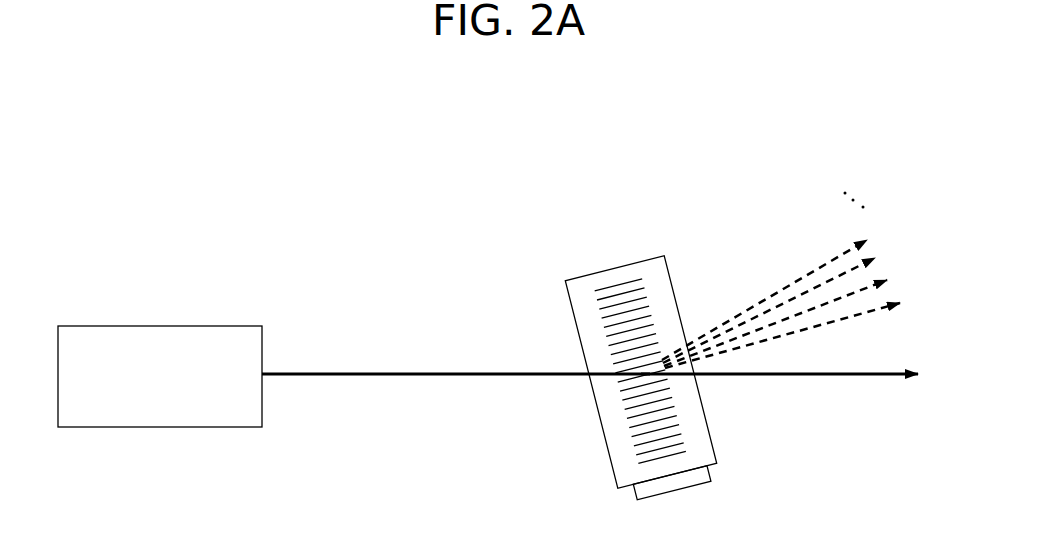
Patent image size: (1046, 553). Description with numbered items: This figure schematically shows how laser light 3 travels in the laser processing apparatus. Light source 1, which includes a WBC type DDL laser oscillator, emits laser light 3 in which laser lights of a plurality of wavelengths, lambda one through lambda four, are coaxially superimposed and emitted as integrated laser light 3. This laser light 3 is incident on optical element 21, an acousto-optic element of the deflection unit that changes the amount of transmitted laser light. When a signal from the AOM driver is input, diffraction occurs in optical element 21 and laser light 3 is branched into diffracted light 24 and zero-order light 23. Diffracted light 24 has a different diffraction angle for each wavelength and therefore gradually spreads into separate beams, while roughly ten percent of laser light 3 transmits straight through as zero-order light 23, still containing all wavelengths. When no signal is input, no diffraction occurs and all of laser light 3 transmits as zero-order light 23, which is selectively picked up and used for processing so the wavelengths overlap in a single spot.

The light source 1 is at (143, 325).
The laser light 3 is at (375, 377).
The optical element 21 is at (617, 268).
The zero-order light 23 is at (800, 377).
The diffracted light 24 is at (808, 272).